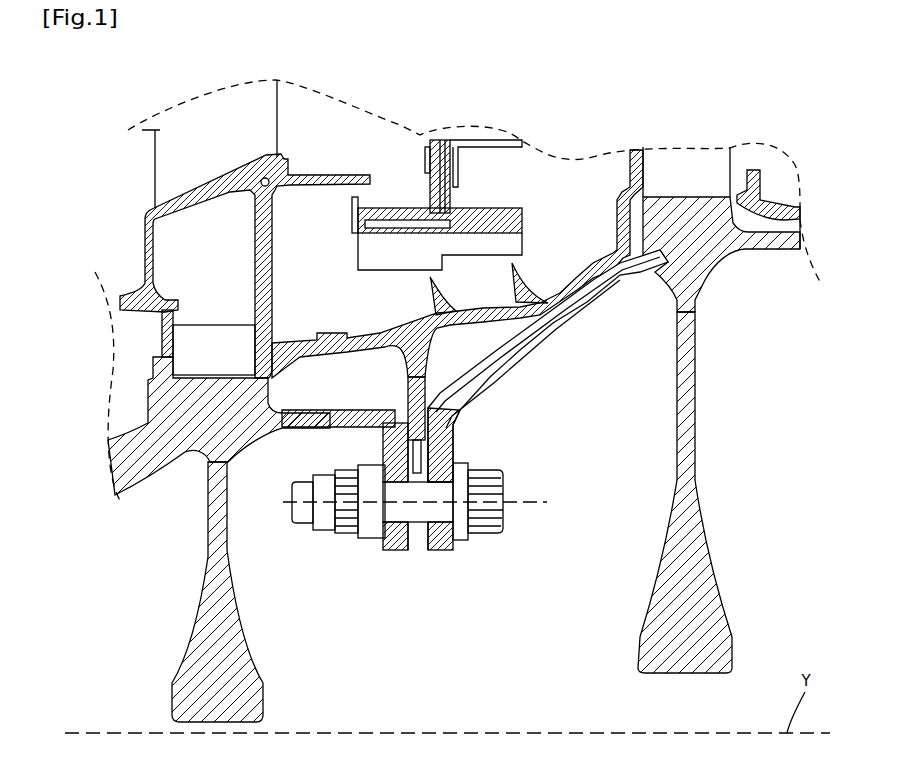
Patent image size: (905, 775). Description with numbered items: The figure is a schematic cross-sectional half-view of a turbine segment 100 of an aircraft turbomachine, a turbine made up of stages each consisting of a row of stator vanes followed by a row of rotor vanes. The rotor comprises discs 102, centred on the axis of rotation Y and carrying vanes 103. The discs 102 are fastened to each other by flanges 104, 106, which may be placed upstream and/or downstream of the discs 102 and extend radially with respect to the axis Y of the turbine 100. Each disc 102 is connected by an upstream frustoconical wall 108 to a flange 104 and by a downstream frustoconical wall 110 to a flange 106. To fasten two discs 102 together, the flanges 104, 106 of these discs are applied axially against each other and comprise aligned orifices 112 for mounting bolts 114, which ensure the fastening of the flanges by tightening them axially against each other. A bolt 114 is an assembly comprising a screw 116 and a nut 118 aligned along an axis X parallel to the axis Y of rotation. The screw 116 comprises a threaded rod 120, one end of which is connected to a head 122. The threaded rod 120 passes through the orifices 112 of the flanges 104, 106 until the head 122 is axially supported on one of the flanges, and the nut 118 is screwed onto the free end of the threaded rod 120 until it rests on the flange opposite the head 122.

The turbine segment 100 is at (568, 138).
The disc 102 is at (214, 520).
The vane 103 is at (188, 128).
The flange 104 is at (442, 450).
The flange 106 is at (383, 460).
The upstream frustoconical wall 108 is at (605, 316).
The downstream frustoconical wall 110 is at (325, 418).
The orifice 112 is at (433, 520).
The bolt 114 is at (538, 530).
The screw 116 is at (407, 510).
The nut 118 is at (350, 535).
The threaded rod 120 is at (312, 530).
The head 122 is at (490, 540).